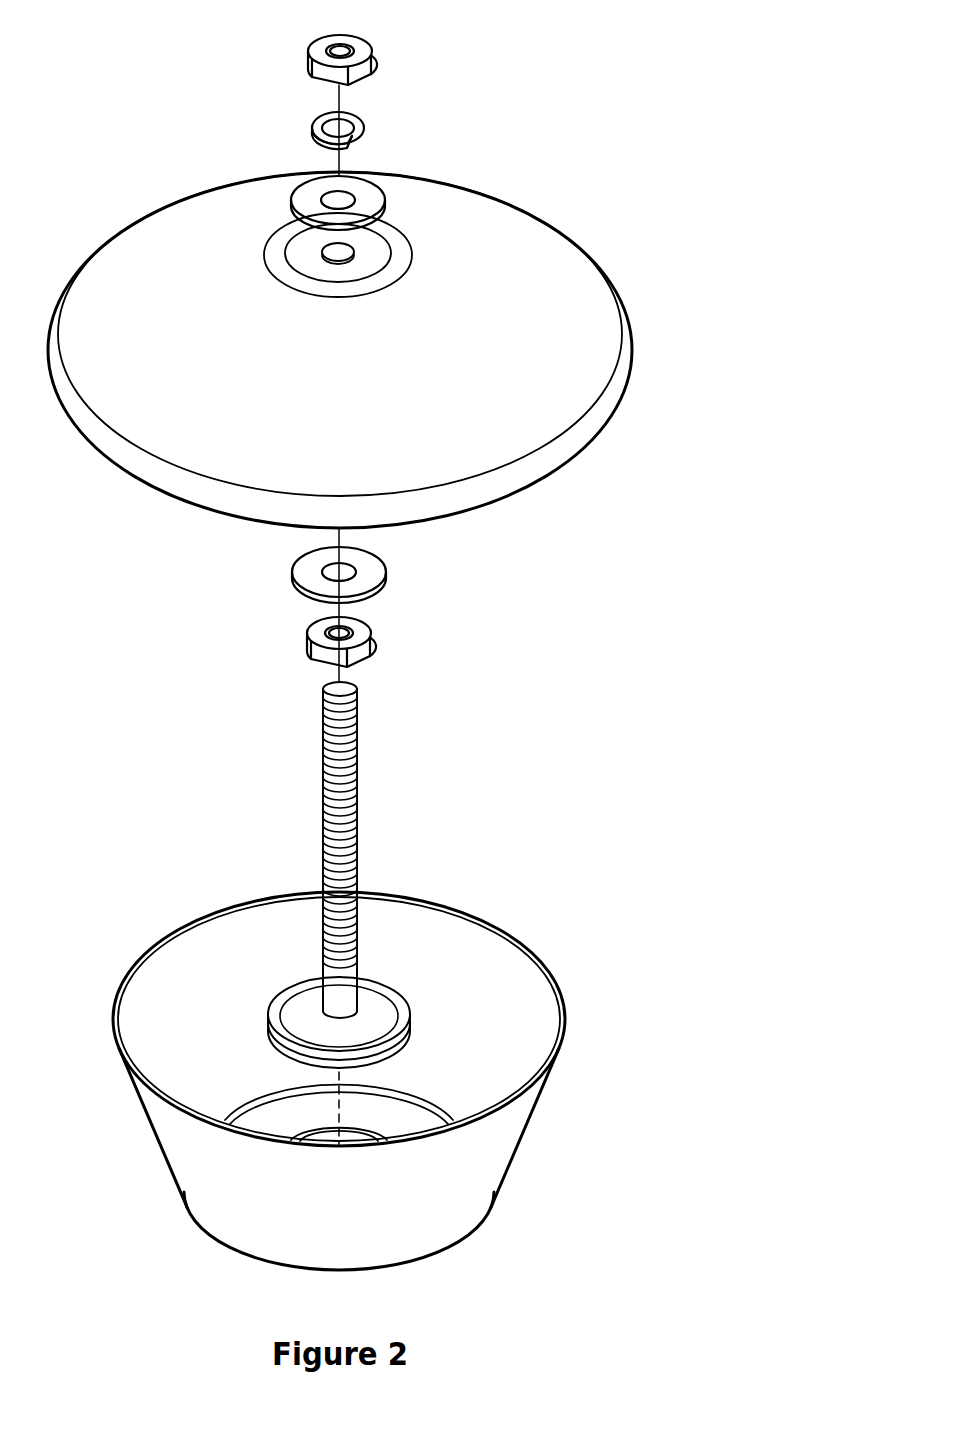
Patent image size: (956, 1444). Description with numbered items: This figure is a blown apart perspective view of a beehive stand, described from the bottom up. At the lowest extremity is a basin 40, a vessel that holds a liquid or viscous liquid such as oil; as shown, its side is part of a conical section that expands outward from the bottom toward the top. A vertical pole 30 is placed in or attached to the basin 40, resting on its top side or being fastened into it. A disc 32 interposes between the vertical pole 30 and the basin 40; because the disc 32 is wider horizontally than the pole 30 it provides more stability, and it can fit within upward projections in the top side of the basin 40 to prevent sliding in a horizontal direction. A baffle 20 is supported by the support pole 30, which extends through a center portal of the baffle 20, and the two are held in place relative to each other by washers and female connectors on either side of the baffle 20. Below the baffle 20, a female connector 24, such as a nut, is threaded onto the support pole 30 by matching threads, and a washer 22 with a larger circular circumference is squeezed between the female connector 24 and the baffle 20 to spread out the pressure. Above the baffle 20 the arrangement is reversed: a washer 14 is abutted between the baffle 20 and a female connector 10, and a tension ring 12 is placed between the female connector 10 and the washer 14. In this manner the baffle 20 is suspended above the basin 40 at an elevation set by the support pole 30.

The female connector 10 is at (370, 56).
The tension ring 12 is at (362, 120).
The washer 14 is at (365, 188).
The baffle 20 is at (617, 392).
The washer 22 is at (370, 582).
The female connector 24 is at (367, 645).
The vertical pole 30 is at (340, 797).
The disc 32 is at (378, 1007).
The basin 40 is at (524, 1100).